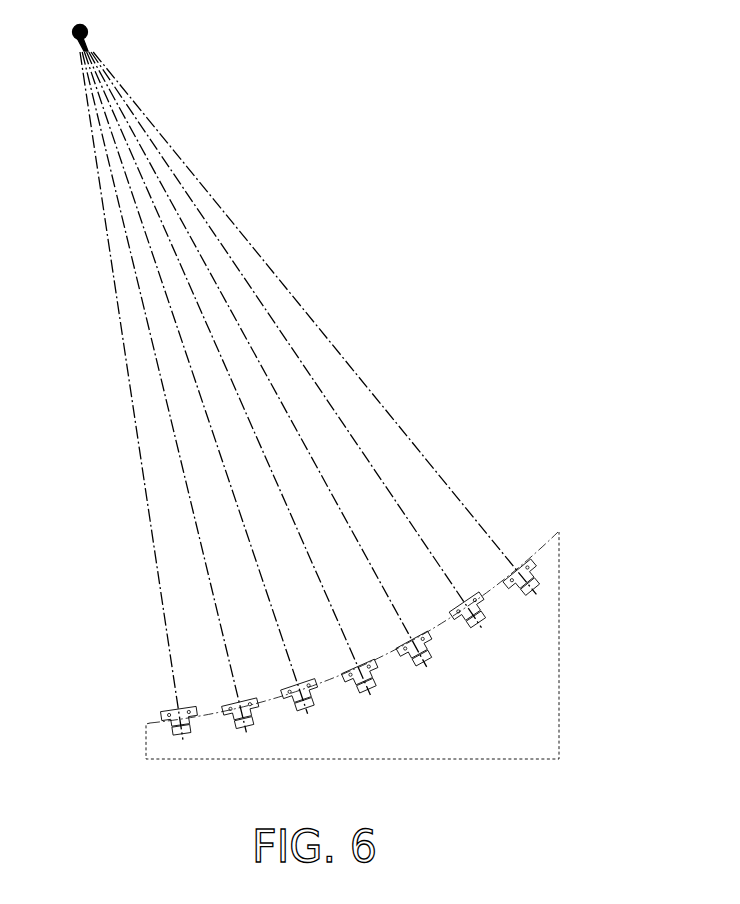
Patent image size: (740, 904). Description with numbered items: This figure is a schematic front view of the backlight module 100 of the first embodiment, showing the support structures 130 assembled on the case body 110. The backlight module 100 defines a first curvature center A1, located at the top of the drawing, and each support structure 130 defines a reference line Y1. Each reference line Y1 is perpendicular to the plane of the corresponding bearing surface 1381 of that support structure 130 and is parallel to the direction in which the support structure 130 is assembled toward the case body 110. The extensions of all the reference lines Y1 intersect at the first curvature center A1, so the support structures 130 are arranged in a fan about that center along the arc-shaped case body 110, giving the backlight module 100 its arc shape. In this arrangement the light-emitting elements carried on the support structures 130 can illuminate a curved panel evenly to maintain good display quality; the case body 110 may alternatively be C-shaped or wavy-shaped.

The backlight module 100 is at (564, 522).
The case body 110 is at (559, 645).
The support structure 130 is at (128, 713).
The bearing surface 1381 is at (168, 712).
The first curvature center A1 is at (64, 29).
The reference line Y1 is at (126, 396).